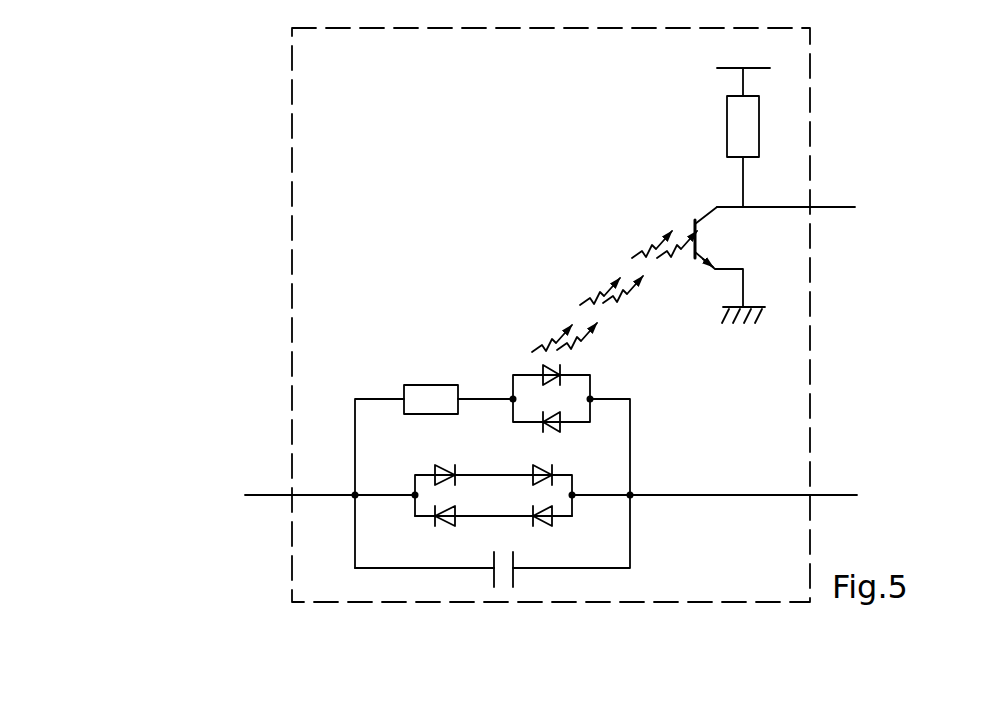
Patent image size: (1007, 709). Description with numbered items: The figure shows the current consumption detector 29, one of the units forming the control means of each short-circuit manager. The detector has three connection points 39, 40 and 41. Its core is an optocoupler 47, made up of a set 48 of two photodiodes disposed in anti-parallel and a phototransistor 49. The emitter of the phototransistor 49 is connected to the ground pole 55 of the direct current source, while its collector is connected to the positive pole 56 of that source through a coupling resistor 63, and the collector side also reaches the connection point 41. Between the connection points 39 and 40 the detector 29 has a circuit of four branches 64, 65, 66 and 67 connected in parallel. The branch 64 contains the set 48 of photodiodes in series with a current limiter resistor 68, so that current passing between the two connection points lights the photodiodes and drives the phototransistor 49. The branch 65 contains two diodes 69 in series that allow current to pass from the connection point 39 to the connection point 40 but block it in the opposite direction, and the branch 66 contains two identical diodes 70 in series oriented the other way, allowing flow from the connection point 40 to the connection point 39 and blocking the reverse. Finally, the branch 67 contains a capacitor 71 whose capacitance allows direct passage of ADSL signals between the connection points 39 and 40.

The current consumption detector 29 is at (292, 158).
The connection point 39 is at (291, 496).
The connection point 40 is at (812, 495).
The connection point 41 is at (810, 207).
The optocoupler 47 is at (578, 264).
The set of two photodiodes 48 is at (497, 370).
The phototransistor 49 is at (701, 236).
The ground pole 55 is at (766, 312).
The positive pole 56 is at (717, 68).
The coupling resistor 63 is at (740, 128).
The branch 64 is at (474, 418).
The branch 65 is at (439, 484).
The branch 66 is at (400, 532).
The branch 67 is at (405, 579).
The current limiter resistor 68 is at (440, 397).
The diodes 69 is at (535, 466).
The diodes 70 is at (532, 518).
The capacitor 71 is at (500, 573).